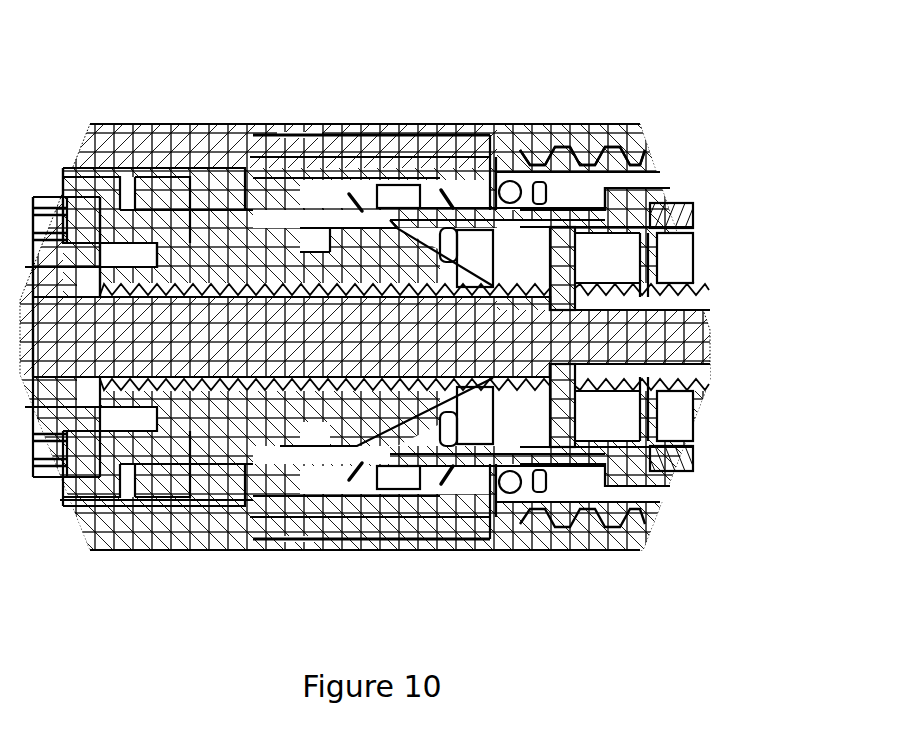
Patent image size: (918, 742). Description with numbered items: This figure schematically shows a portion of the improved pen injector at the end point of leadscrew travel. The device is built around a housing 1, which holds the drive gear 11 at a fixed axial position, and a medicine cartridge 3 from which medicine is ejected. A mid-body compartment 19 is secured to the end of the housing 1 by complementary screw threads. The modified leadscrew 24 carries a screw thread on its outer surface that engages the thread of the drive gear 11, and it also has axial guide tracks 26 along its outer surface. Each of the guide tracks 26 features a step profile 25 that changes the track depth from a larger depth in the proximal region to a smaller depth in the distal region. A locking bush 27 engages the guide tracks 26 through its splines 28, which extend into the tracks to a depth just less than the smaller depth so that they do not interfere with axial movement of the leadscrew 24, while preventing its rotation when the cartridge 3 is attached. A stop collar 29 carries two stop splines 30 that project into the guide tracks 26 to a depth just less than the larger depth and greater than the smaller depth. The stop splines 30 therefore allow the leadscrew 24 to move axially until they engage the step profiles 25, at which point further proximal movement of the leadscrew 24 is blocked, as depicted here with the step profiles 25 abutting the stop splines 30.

The housing 1 is at (135, 538).
The medicine cartridge 3 is at (675, 448).
The drive gear 11 is at (238, 258).
The mid-body compartment 19 is at (311, 130).
The leadscrew 24 is at (457, 333).
The step profile 25 is at (540, 300).
The axial guide tracks 26 is at (652, 300).
The locking bush 27 is at (270, 543).
The splines 28 is at (420, 258).
The stop collar 29 is at (623, 228).
The stop splines 30 is at (553, 263).